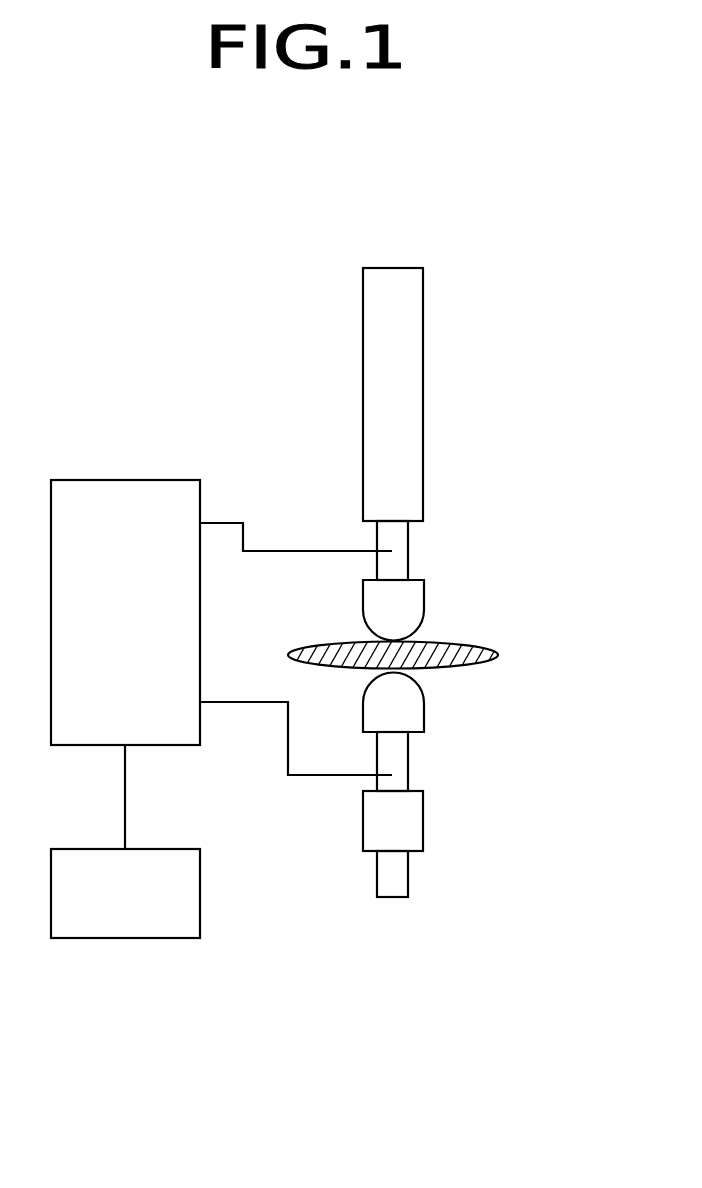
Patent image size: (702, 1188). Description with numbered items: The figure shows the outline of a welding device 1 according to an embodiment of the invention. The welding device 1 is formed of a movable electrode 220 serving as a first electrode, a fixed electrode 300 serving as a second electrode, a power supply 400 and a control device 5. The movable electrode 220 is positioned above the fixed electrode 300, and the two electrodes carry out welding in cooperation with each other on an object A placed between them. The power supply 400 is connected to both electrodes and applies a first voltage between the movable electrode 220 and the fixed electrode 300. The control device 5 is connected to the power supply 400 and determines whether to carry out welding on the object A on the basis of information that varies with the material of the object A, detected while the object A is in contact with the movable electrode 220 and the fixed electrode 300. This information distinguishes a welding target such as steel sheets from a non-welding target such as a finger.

The welding device 1 is at (480, 262).
The movable electrode 220 is at (400, 606).
The object A is at (498, 649).
The fixed electrode 300 is at (402, 708).
The power supply 400 is at (120, 480).
The control device 5 is at (125, 938).